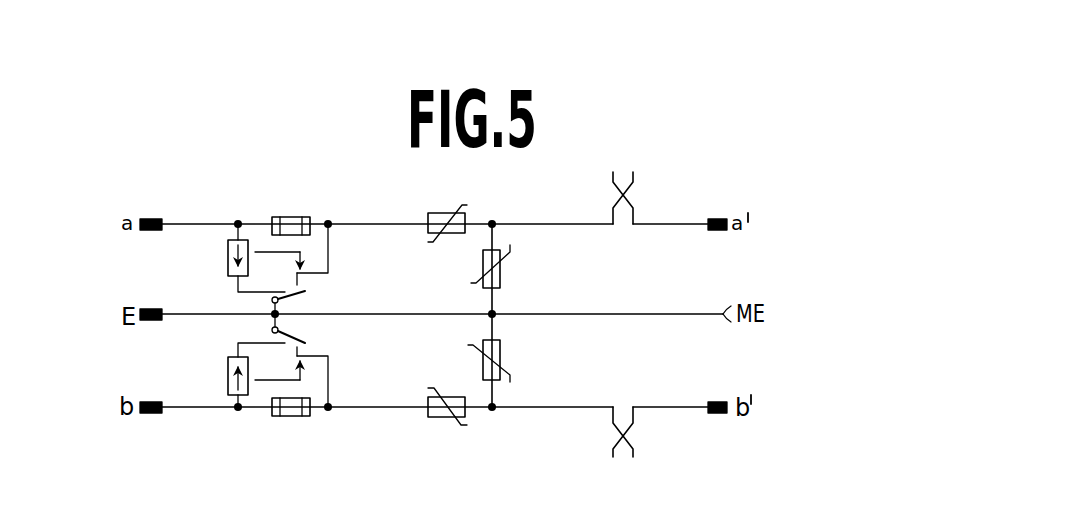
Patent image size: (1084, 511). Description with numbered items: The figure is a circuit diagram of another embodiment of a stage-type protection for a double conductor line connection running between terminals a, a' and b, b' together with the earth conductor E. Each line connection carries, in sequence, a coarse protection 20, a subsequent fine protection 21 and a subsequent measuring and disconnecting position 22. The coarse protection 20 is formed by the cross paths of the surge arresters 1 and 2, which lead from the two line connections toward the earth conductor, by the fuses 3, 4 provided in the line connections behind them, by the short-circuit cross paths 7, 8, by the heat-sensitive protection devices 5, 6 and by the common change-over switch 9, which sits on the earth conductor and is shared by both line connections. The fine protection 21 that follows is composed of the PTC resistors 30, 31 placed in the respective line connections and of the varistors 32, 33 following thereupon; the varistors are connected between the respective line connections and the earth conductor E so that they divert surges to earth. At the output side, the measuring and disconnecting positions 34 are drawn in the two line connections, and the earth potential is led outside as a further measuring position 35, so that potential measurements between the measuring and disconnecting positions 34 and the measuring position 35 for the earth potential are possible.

The surge arrester 1 is at (228, 257).
The surge arrester 2 is at (228, 378).
The fuse 3 is at (283, 217).
The fuse 4 is at (301, 417).
The heat-sensitive protection device 5 is at (287, 253).
The heat-sensitive protection device 6 is at (286, 380).
The short-circuit cross path 7 is at (328, 258).
The short-circuit cross path 8 is at (331, 386).
The common change-over switch 9 is at (260, 323).
The coarse protection 20 is at (244, 422).
The fine protection 21 is at (487, 420).
The measuring and disconnecting position 22 is at (622, 455).
The PTC resistor 30 is at (441, 214).
The PTC resistor 31 is at (445, 418).
The varistor 32 is at (503, 280).
The varistor 33 is at (505, 355).
The measuring and disconnecting position 34 is at (624, 213).
The measuring position 35 is at (723, 318).